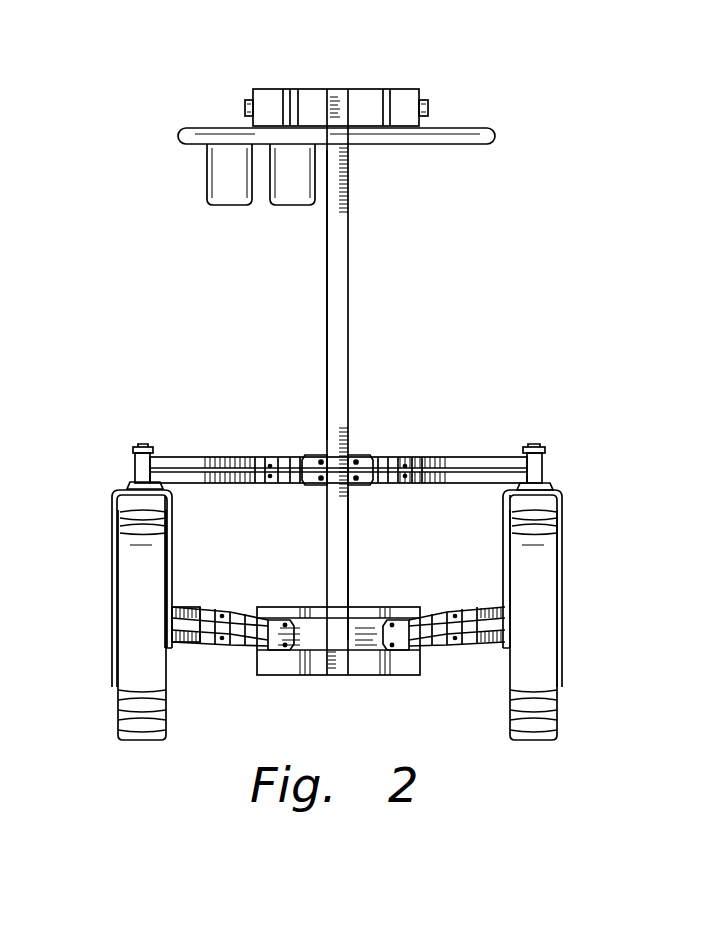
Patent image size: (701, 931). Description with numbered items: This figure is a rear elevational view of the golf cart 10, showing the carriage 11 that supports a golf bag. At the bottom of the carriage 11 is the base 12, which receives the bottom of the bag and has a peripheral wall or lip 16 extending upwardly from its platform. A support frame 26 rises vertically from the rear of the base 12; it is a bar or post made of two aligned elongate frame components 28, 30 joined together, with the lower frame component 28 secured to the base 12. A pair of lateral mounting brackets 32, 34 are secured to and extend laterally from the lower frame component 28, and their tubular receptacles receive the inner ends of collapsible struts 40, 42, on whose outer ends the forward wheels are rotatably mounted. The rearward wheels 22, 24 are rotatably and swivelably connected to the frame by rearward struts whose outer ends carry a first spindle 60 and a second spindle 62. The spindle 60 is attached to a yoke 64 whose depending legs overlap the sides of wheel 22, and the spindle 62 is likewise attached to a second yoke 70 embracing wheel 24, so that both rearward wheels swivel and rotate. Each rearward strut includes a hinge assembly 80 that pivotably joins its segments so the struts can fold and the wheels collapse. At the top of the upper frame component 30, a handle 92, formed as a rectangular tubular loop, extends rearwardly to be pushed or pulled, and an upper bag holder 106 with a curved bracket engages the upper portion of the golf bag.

The cart 10 is at (166, 315).
The carriage 11 is at (318, 295).
The base 12 is at (273, 675).
The peripheral wall or lip 16 is at (282, 605).
The rearward wheel 22 is at (118, 693).
The rearward wheel 24 is at (558, 690).
The support frame 26 is at (348, 330).
The frame component 28 is at (348, 550).
The frame component 30 is at (348, 233).
The lateral mounting bracket 32 is at (373, 647).
The lateral mounting bracket 34 is at (313, 637).
The collapsible strut 40 is at (455, 605).
The collapsible strut 42 is at (217, 607).
The spindle 60 is at (133, 465).
The spindle 62 is at (545, 468).
The yoke 64 is at (117, 490).
The yoke 70 is at (560, 490).
The hinge assembly 80 is at (277, 457).
The handle 92 is at (495, 134).
The upper bag holder 106 is at (358, 89).